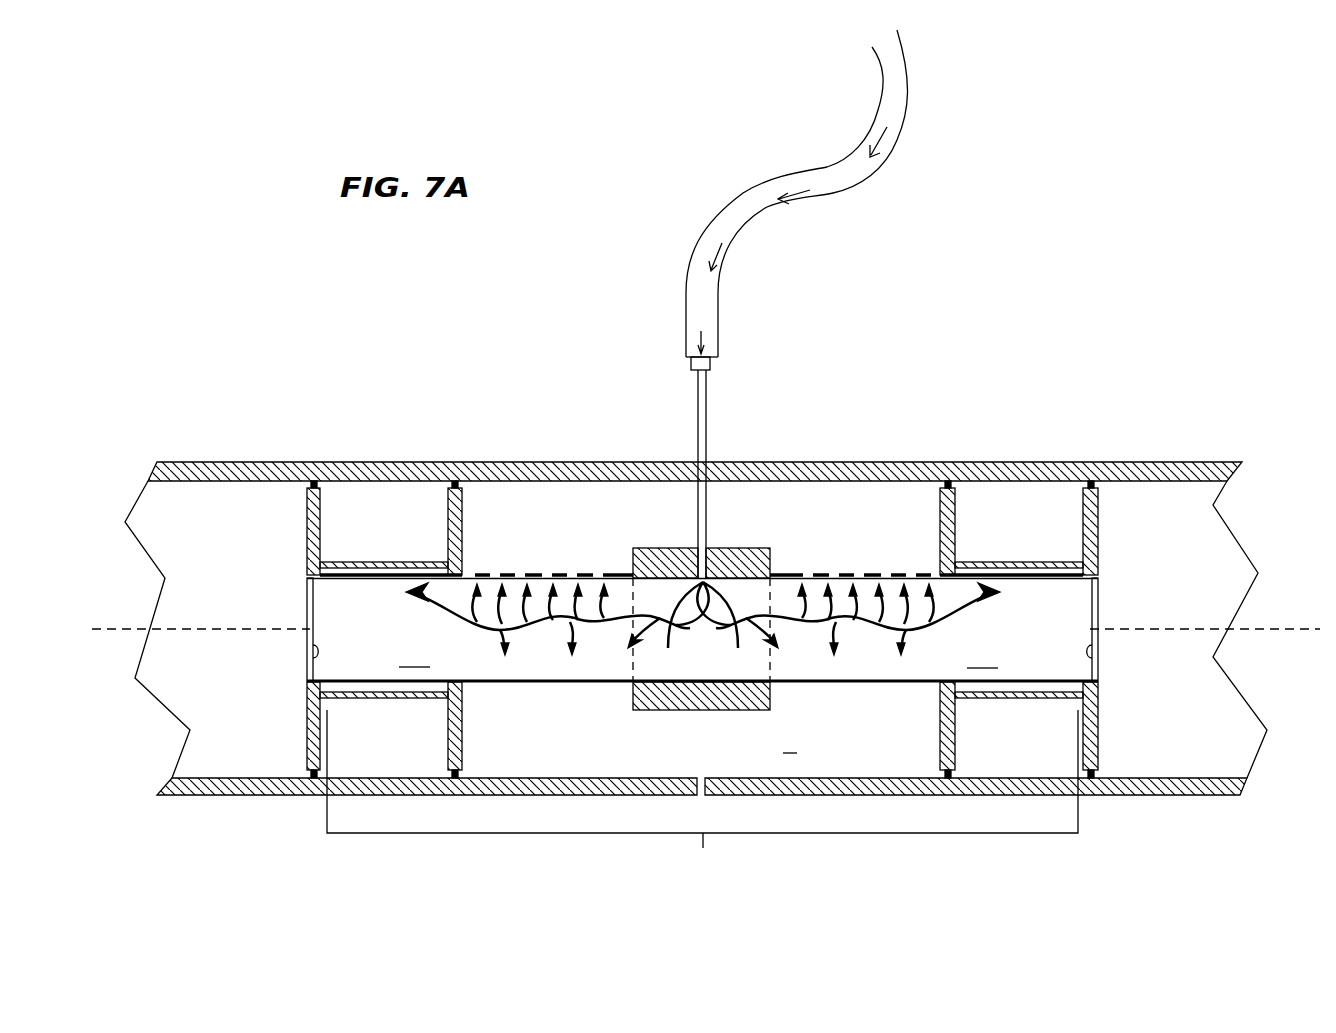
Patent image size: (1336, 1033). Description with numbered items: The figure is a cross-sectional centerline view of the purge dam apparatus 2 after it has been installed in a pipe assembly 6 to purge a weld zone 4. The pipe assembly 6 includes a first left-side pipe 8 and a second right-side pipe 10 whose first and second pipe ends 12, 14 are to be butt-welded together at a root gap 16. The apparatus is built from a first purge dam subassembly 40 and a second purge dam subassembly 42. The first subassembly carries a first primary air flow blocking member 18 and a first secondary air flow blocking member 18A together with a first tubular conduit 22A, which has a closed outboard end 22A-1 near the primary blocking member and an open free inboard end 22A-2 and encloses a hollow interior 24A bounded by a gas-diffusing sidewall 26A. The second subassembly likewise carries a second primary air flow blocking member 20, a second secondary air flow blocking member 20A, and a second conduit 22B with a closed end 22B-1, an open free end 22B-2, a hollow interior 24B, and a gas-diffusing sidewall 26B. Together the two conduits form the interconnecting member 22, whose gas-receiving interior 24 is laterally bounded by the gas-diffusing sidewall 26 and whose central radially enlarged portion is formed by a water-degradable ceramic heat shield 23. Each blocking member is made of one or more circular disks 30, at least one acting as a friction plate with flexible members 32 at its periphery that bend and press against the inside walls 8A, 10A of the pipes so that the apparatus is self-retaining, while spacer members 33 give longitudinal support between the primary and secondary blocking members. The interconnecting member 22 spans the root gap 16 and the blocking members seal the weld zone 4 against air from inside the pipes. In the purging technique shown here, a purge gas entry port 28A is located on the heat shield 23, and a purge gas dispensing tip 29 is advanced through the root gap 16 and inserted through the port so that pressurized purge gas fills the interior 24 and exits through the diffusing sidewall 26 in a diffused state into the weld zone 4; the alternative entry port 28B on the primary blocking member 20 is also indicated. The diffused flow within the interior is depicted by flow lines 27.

The purge dam apparatus 2 is at (266, 755).
The weld zone 4 is at (715, 667).
The pipe assembly 6 is at (895, 398).
The first left-side pipe 8 is at (145, 555).
The inside wall of first pipe 8A is at (222, 777).
The second right-side pipe 10 is at (1247, 542).
The inside wall of second pipe 10A is at (1208, 777).
The first pipe end 12 is at (588, 462).
The second pipe end 14 is at (804, 462).
The root gap 16 is at (706, 465).
The first primary air flow blocking member 18 is at (322, 508).
The first secondary air flow blocking member 18A is at (463, 508).
The second primary air flow blocking member 20 is at (1100, 509).
The second secondary air flow blocking member 20A is at (957, 509).
The interconnecting member 22 is at (702, 794).
The first conduit 22A is at (507, 687).
The closed end of first conduit 22A-1 is at (307, 656).
The open free end of first conduit 22A-2 is at (668, 620).
The second conduit 22B is at (890, 687).
The closed end of second conduit 22B-1 is at (1098, 662).
The open free end of second conduit 22B-2 is at (738, 618).
The ceramic heat shield 23 is at (745, 548).
The gas-receiving interior 24 is at (1072, 606).
The hollow interior of first conduit 24A is at (414, 655).
The hollow interior of second conduit 24B is at (982, 656).
The gas-diffusing sidewall 26 is at (574, 690).
The gas-diffusing sidewall of first conduit 26A is at (470, 575).
The gas-diffusing sidewall of second conduit 26B is at (935, 575).
The ion flow lines 27 is at (610, 575).
The purge gas entry port 28A is at (696, 545).
The purge gas entry port 28B is at (1098, 629).
The purge gas dispensing tip 29 is at (698, 402).
The circular disk 30 is at (446, 541).
The flexible members 32 is at (455, 484).
The spacer members 33 is at (418, 698).
The first purge dam subassembly 40 is at (238, 498).
The second purge dam subassembly 42 is at (1192, 497).